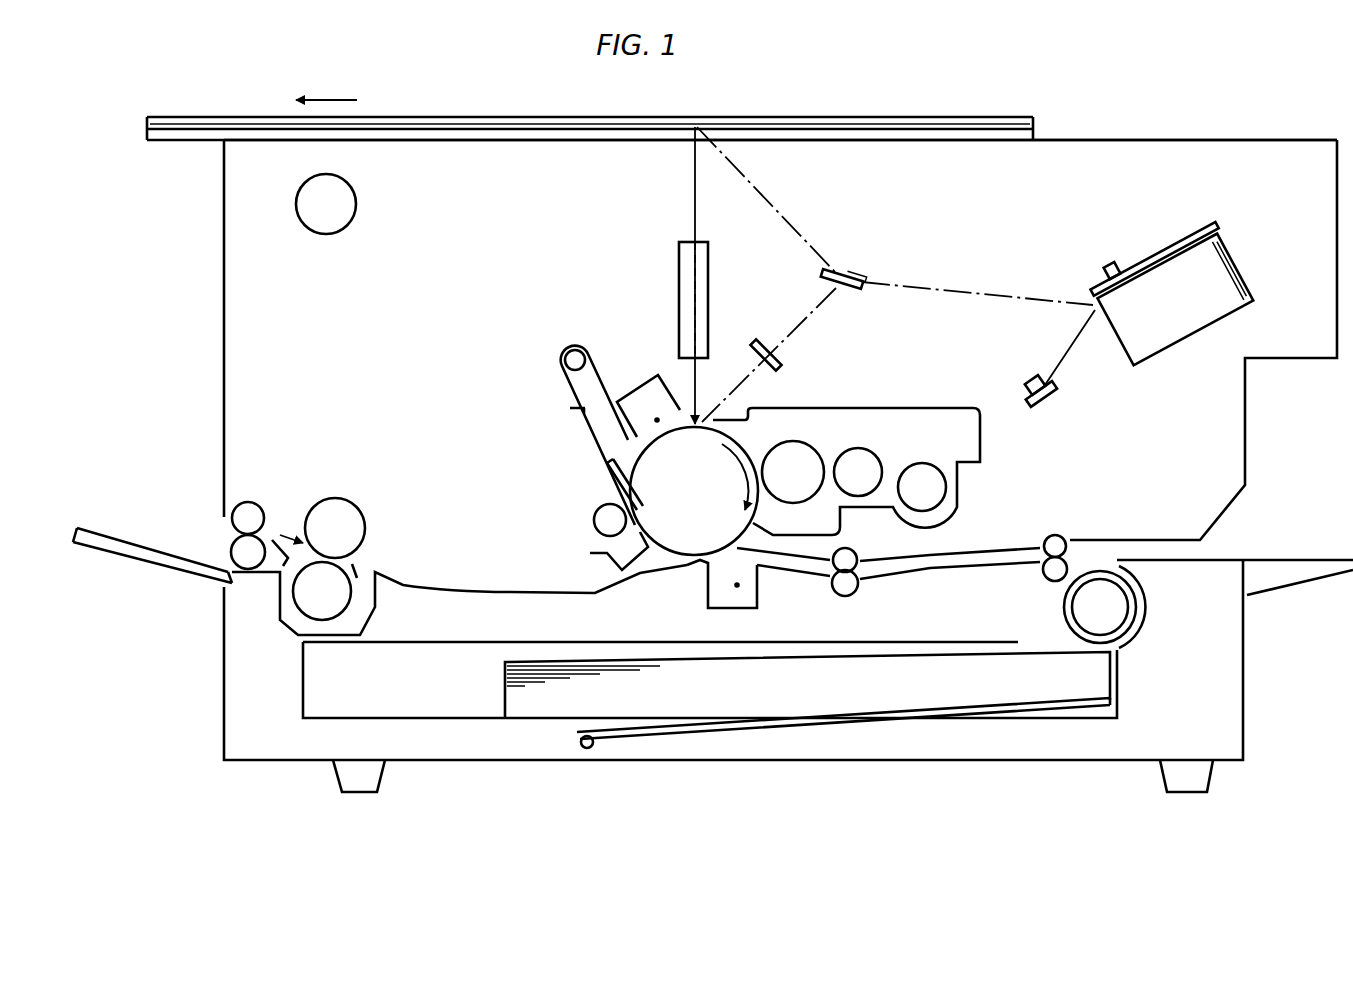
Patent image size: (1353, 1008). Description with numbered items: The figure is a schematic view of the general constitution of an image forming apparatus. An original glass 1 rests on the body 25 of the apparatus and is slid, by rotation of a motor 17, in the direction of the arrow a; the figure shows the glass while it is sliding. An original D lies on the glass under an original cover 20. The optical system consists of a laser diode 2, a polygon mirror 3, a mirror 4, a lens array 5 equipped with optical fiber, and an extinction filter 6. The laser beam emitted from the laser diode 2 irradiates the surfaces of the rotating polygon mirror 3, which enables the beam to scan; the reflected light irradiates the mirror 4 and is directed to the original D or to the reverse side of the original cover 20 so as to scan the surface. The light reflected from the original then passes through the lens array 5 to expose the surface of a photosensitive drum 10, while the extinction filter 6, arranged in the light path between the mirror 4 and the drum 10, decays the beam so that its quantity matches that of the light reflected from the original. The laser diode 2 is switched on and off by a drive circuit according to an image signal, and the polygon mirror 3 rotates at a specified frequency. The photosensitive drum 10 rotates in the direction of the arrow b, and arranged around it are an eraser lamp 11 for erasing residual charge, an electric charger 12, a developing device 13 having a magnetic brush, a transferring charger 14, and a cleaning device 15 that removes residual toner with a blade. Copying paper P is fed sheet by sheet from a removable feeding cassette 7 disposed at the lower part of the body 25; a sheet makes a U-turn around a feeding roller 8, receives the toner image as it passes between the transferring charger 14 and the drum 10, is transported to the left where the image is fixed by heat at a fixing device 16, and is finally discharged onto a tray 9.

The original glass 1 is at (470, 140).
The laser diode 2 is at (1056, 393).
The polygon mirror 3 is at (1105, 284).
The mirror 4 is at (841, 288).
The lens array 5 is at (679, 278).
The extinction filter 6 is at (771, 341).
The feeding cassette 7 is at (453, 718).
The feeding roller 8 is at (1064, 608).
The tray 9 is at (118, 540).
The photosensitive drum 10 is at (728, 447).
The eraser lamp 11 is at (575, 350).
The electric charger 12 is at (648, 378).
The developing device 13 is at (914, 405).
The transferring charger 14 is at (757, 598).
The cleaning device 15 is at (603, 478).
The fixing device 16 is at (350, 495).
The motor 17 is at (322, 234).
The original cover 20 is at (1006, 117).
The body 25 is at (224, 199).
The original D is at (934, 122).
The copying paper P is at (625, 660).
The arrow a is at (326, 84).
The arrow b is at (734, 478).